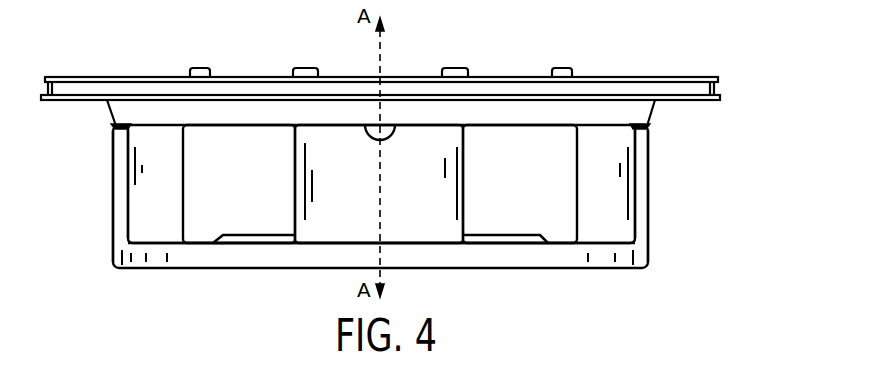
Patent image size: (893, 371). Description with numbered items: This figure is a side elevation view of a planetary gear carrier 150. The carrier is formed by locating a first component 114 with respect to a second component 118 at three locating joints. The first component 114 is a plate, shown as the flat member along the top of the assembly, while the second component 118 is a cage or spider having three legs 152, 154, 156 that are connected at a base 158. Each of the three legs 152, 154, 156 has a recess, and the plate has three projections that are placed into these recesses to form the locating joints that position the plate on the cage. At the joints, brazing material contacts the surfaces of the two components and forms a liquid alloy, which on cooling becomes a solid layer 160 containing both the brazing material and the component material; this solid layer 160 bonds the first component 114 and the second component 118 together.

The first component 114 is at (518, 90).
The second component 118 is at (640, 257).
The planetary gear carrier 150 is at (737, 59).
The leg 152 is at (134, 202).
The leg 154 is at (452, 188).
The leg 156 is at (627, 186).
The base 158 is at (529, 262).
The solid layer 160 is at (113, 127).